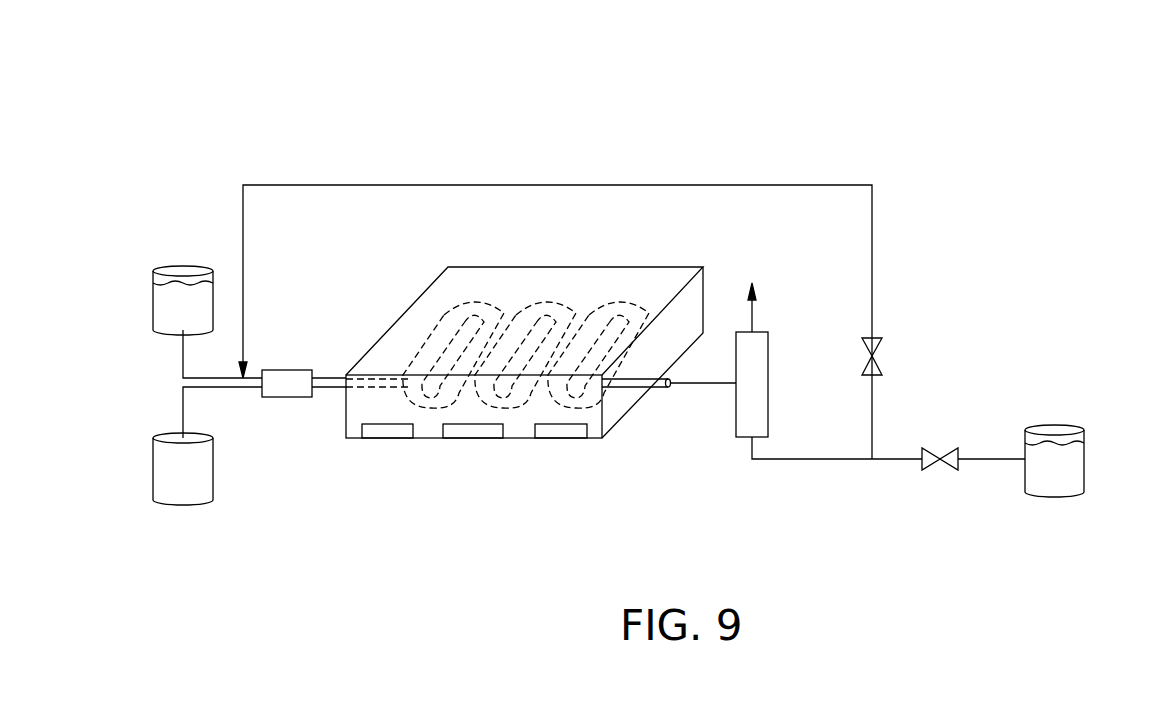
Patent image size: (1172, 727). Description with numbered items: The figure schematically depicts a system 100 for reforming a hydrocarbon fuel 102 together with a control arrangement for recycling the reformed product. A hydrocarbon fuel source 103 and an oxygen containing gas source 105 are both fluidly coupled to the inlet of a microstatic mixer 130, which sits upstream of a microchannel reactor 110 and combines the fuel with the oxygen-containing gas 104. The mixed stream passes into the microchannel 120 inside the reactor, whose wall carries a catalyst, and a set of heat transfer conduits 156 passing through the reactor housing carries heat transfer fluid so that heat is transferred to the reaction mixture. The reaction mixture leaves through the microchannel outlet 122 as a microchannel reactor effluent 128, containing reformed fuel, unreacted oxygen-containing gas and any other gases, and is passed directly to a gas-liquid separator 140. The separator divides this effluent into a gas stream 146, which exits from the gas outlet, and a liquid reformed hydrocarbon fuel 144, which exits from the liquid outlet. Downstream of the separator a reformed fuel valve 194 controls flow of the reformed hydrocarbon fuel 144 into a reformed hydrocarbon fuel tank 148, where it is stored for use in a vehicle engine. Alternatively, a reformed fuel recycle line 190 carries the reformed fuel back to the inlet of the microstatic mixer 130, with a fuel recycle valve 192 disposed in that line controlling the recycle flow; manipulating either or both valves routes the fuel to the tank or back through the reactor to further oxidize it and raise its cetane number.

The system 100 is at (203, 118).
The hydrocarbon fuel 102 is at (181, 357).
The hydrocarbon fuel source 103 is at (160, 302).
The oxygen-containing gas 104 is at (181, 403).
The oxygen containing gas source 105 is at (158, 470).
The microchannel reactor 110 is at (435, 438).
The microchannel 120 is at (576, 304).
The microchannel outlet 122 is at (655, 390).
The microchannel reactor effluent 128 is at (710, 385).
The microstatic mixer 130 is at (283, 397).
The gas-liquid separator 140 is at (768, 355).
The reformed hydrocarbon fuel 144 is at (807, 458).
The gas stream 146 is at (756, 312).
The reformed hydrocarbon fuel tank 148 is at (1055, 424).
The heat transfer conduits 156 is at (390, 430).
The reformed fuel recycle line 190 is at (694, 185).
The fuel recycle valve 192 is at (863, 352).
The reformed fuel valve 194 is at (935, 470).